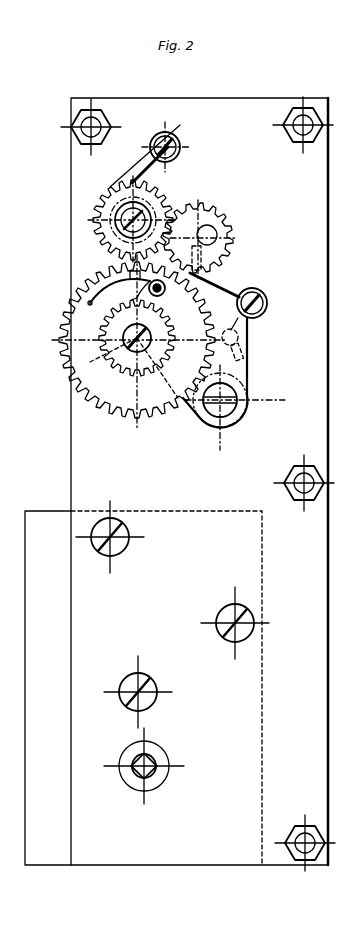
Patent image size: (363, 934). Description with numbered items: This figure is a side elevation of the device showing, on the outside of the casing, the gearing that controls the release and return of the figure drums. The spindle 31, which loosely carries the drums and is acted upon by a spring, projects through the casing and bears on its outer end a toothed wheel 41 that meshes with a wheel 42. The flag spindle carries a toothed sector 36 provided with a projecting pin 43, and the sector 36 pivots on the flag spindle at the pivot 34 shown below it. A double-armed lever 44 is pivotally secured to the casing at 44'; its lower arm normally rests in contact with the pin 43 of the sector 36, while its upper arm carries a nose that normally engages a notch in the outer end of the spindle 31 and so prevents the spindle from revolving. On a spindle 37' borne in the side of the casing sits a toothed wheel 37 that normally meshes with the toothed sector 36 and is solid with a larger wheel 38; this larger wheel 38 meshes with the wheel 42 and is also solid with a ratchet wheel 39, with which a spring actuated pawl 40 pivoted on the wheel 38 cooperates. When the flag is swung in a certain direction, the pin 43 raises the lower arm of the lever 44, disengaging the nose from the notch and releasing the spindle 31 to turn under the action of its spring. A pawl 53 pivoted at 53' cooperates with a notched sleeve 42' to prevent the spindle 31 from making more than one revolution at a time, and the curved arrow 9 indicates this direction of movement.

The direction arrow 9 is at (213, 440).
The spindle 31 is at (217, 232).
The pivot pin 34 is at (226, 412).
The toothed sector 36 is at (247, 375).
The toothed wheel 37 is at (137, 348).
The spindle 37' is at (109, 327).
The larger wheel 38 is at (108, 405).
The ratchet wheel 39 is at (123, 342).
The spring actuated pawl 40 is at (166, 291).
The toothed wheel 41 is at (232, 248).
The wheel 42 is at (125, 219).
The notched sleeve 42' is at (193, 186).
The projecting pin 43 is at (239, 338).
The double-armed lever 44 is at (228, 282).
The pivot 44' is at (270, 303).
The pawl 53 is at (138, 156).
The pivot 53' is at (173, 143).